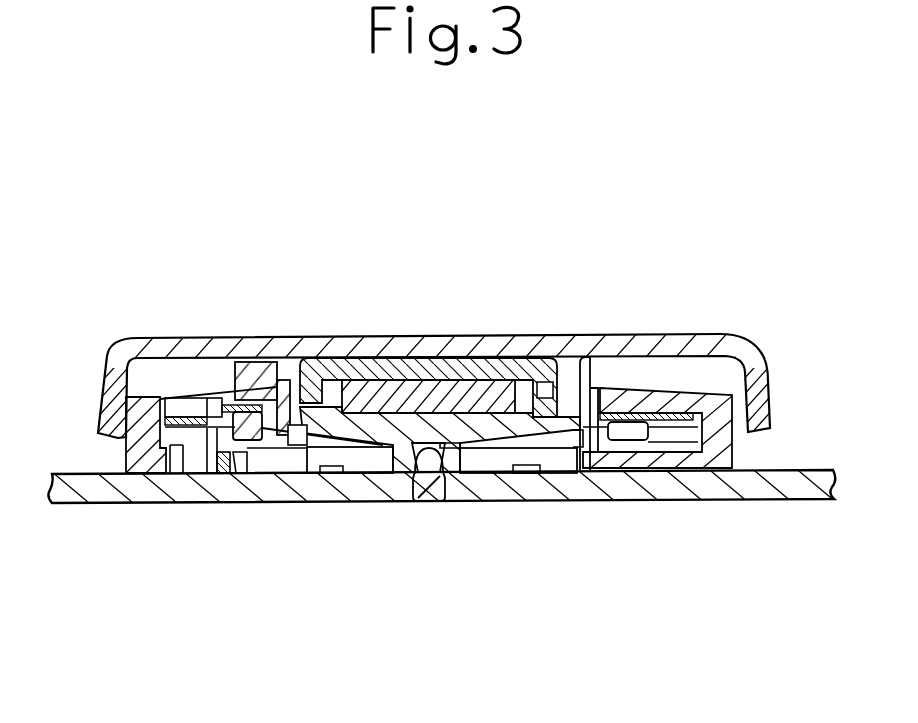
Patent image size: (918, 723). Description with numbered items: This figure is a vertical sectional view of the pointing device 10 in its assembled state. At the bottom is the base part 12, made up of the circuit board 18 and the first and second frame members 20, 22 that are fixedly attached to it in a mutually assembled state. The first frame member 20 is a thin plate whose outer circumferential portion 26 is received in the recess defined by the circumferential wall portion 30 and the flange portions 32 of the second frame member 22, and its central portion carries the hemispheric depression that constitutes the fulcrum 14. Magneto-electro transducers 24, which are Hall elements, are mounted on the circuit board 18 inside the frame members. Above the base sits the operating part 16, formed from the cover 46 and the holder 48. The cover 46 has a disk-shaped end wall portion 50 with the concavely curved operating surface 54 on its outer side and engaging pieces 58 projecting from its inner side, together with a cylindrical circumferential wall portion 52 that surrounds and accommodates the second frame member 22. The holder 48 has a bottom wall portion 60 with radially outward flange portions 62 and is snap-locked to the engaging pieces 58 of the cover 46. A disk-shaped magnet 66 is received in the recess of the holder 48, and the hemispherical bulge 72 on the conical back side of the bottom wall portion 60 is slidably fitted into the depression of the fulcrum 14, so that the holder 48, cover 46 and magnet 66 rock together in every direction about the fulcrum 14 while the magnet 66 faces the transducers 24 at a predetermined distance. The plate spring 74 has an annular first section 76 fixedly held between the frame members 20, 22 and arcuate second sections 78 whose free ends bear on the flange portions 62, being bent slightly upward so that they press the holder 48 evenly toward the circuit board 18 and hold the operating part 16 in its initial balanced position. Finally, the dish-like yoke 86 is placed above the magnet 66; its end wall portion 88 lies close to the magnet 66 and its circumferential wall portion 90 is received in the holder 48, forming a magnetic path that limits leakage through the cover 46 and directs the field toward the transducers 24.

The pointing device 10 is at (489, 173).
The base part 12 is at (617, 612).
The fulcrum 14 is at (410, 472).
The operating part 16 is at (155, 230).
The circuit board 18 is at (557, 503).
The first frame member 20 is at (650, 474).
The second frame member 22 is at (742, 452).
The magneto-electro transducer 24 is at (334, 460).
The outer circumferential portion 26 is at (178, 476).
The circumferential wall portion 30 is at (130, 452).
The flange portion 32 is at (700, 378).
The cover 46 is at (211, 337).
The holder 48 is at (222, 372).
The end wall portion 50 is at (665, 335).
The circumferential wall portion 52 is at (748, 383).
The operating surface 54 is at (512, 338).
The engaging piece 58 is at (603, 355).
The bottom wall portion 60 is at (487, 425).
The flange portion 62 is at (240, 474).
The magnet 66 is at (452, 383).
The bulge 72 is at (448, 460).
The plate spring 74 is at (655, 403).
The first section 76 is at (178, 393).
The second section 78 is at (257, 377).
The yoke 86 is at (375, 358).
The end wall portion 88 is at (408, 365).
The circumferential wall portion 90 is at (300, 360).